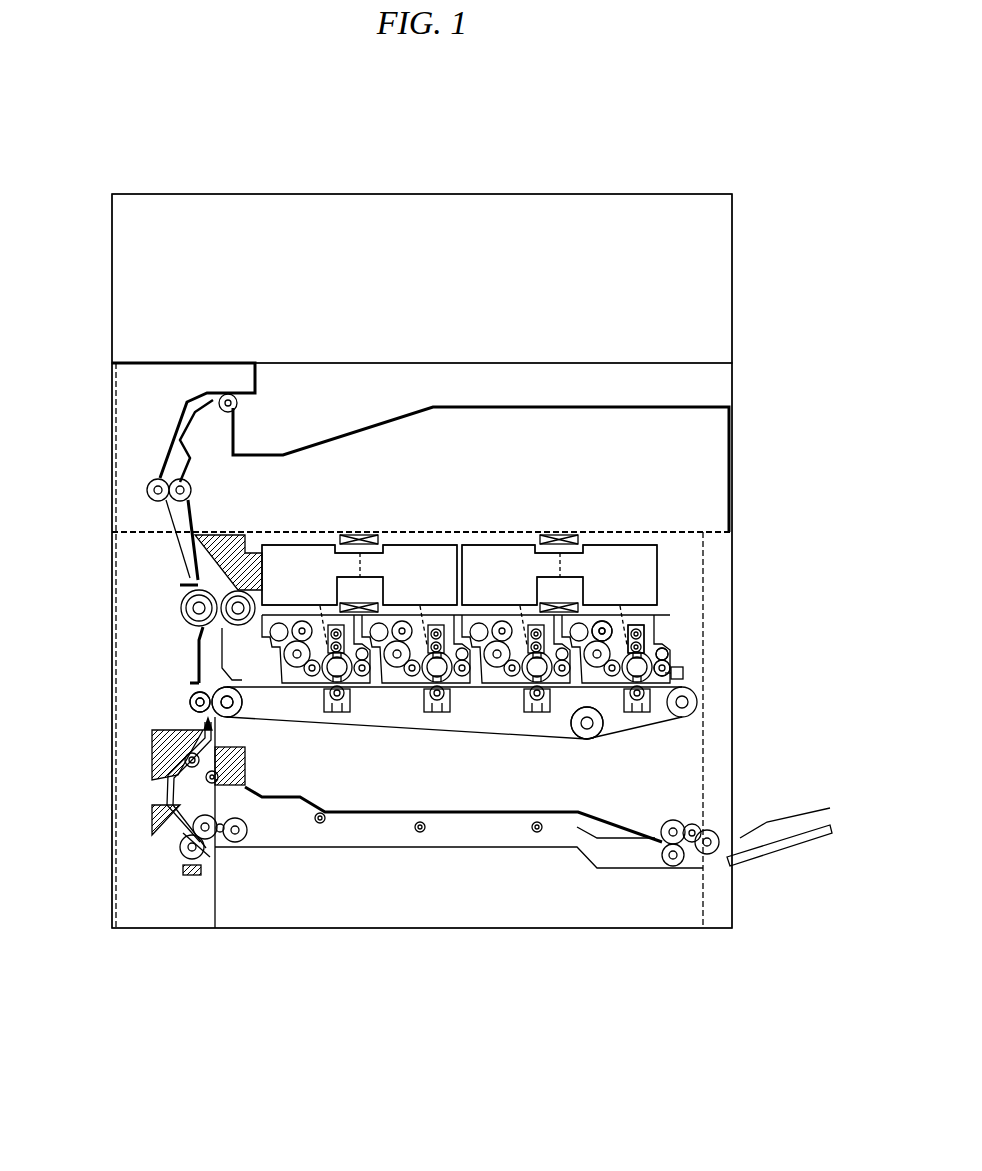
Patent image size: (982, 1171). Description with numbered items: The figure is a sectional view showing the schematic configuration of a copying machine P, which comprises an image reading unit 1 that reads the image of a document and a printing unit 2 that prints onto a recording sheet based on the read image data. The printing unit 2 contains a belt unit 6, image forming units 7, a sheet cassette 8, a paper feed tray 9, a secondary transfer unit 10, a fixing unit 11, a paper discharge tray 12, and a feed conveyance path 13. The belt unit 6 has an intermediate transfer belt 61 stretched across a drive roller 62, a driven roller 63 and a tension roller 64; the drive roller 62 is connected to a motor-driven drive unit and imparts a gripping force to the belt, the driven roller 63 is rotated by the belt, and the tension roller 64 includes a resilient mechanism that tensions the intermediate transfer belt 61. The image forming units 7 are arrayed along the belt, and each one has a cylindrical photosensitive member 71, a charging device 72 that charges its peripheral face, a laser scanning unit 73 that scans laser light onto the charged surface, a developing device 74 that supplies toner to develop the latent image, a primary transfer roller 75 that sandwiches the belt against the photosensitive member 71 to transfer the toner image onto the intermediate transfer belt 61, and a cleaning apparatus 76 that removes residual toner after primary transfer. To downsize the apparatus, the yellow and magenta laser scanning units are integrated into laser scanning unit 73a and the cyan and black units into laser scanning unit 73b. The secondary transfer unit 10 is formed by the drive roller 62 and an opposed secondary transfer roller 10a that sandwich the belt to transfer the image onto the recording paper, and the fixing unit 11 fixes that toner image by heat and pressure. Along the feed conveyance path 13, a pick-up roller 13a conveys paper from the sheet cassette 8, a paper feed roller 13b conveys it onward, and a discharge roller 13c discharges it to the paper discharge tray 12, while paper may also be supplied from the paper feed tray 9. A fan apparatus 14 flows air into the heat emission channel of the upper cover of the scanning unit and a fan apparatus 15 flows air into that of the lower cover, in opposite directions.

The copying machine P is at (162, 166).
The image reading unit 1 is at (120, 273).
The printing unit 2 is at (772, 430).
The belt unit 6 is at (591, 752).
The image forming unit 7 is at (335, 720).
The sheet cassette 8 is at (366, 932).
The paper feed tray 9 is at (770, 828).
The secondary transfer unit 10 is at (178, 694).
The secondary transfer roller 10a is at (192, 707).
The fixing unit 11 is at (170, 600).
The paper discharge tray 12 is at (300, 452).
The feed conveyance path 13 is at (166, 770).
The pick-up roller 13a is at (247, 840).
The paper feed roller 13b is at (220, 815).
The discharge roller 13c is at (228, 412).
The fan apparatus 14 is at (366, 535).
The fan apparatus 15 is at (365, 603).
The intermediate transfer belt 61 is at (490, 735).
The drive roller 62 is at (238, 712).
The driven roller 63 is at (697, 702).
The tension roller 64 is at (580, 726).
The photosensitive member 71 is at (664, 654).
The charging device 72 is at (644, 634).
The laser scanning unit 73 is at (322, 545).
The laser scanning unit 73a is at (310, 482).
The laser scanning unit 73b is at (505, 482).
The developing device 74 is at (612, 630).
The primary transfer roller 75 is at (662, 720).
The cleaning apparatus 76 is at (683, 673).